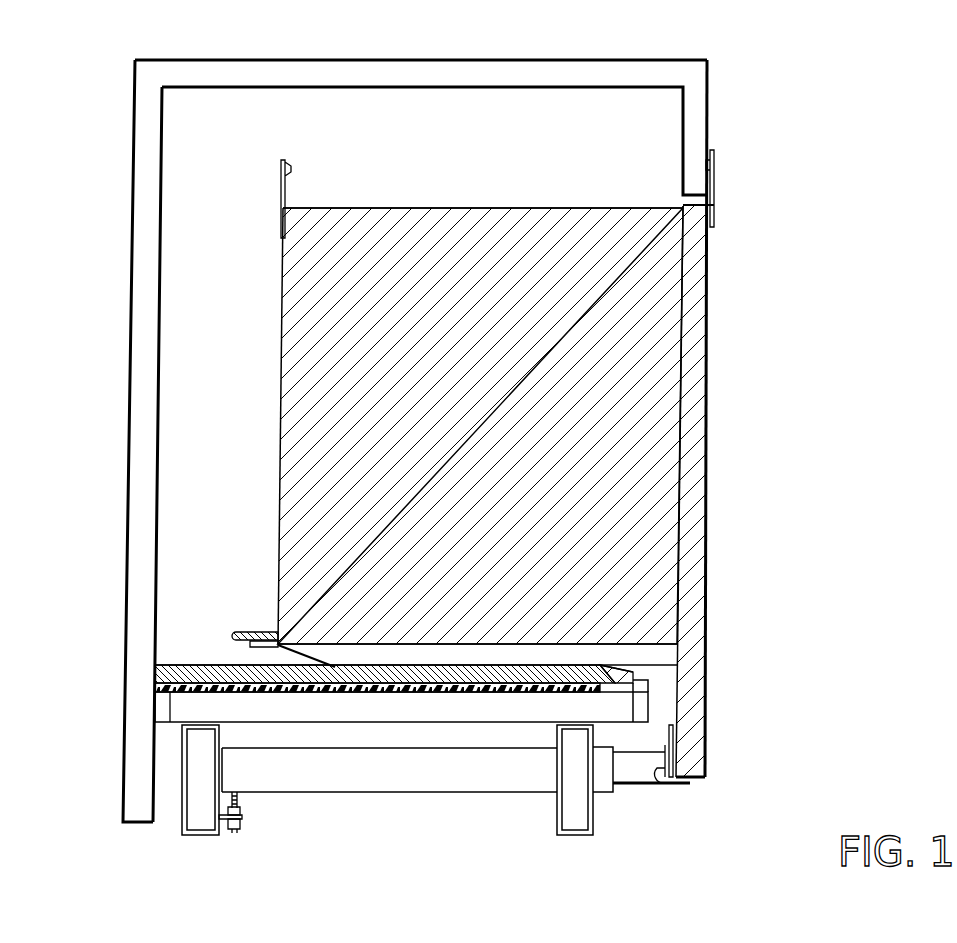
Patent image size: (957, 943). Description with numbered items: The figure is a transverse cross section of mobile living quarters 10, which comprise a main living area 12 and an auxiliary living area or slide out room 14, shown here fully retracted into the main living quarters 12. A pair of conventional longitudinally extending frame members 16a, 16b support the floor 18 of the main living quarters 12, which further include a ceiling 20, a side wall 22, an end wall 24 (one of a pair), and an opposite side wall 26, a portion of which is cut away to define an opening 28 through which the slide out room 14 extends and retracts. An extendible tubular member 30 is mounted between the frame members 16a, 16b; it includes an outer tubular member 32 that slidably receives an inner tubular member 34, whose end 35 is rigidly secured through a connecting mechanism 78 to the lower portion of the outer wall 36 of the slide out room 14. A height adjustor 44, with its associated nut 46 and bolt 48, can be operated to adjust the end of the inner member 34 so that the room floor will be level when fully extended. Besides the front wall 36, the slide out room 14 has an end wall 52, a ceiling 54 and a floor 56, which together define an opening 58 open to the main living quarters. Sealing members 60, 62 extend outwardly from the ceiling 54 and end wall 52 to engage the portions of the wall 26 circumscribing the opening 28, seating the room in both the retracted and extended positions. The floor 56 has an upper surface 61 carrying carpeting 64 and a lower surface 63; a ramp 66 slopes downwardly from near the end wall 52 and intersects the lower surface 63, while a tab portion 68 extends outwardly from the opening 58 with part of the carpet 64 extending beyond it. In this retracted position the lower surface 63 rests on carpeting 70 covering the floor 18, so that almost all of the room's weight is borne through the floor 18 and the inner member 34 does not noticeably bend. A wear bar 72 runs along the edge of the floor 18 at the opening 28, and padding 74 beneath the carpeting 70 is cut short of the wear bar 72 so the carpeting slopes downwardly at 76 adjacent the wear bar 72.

The mobile living quarters 10 is at (755, 95).
The main living area 12 is at (608, 68).
The slide out room 14 is at (712, 288).
The frame member 16a is at (576, 835).
The frame member 16b is at (180, 815).
The floor 18 is at (378, 716).
The ceiling 20 is at (462, 72).
The side wall 22 is at (135, 372).
The end wall 24 is at (436, 160).
The side wall 26 is at (697, 128).
The opening 28 is at (716, 192).
The extendible tubular member 30 is at (496, 795).
The outer tubular member 32 is at (420, 778).
The inner tubular member 34 is at (636, 775).
The end 35 is at (662, 786).
The outer wall 36 is at (697, 603).
The height adjustor 44 is at (262, 812).
The nut 46 is at (233, 832).
The bolt 48 is at (236, 797).
The end wall 52 is at (456, 428).
The ceiling 54 is at (515, 208).
The floor 56 is at (375, 660).
The opening 58 is at (279, 438).
The sealing member 60 is at (281, 190).
The upper surface 61 is at (425, 668).
The sealing member 62 is at (716, 206).
The lower surface 63 is at (628, 668).
The carpeting 64 is at (250, 632).
The ramp 66 is at (323, 658).
The tab portion 68 is at (252, 651).
The carpeting 70 is at (172, 672).
The wear bar 72 is at (648, 695).
The padding 74 is at (548, 690).
The downward slope 76 is at (600, 680).
The connecting mechanism 78 is at (672, 750).